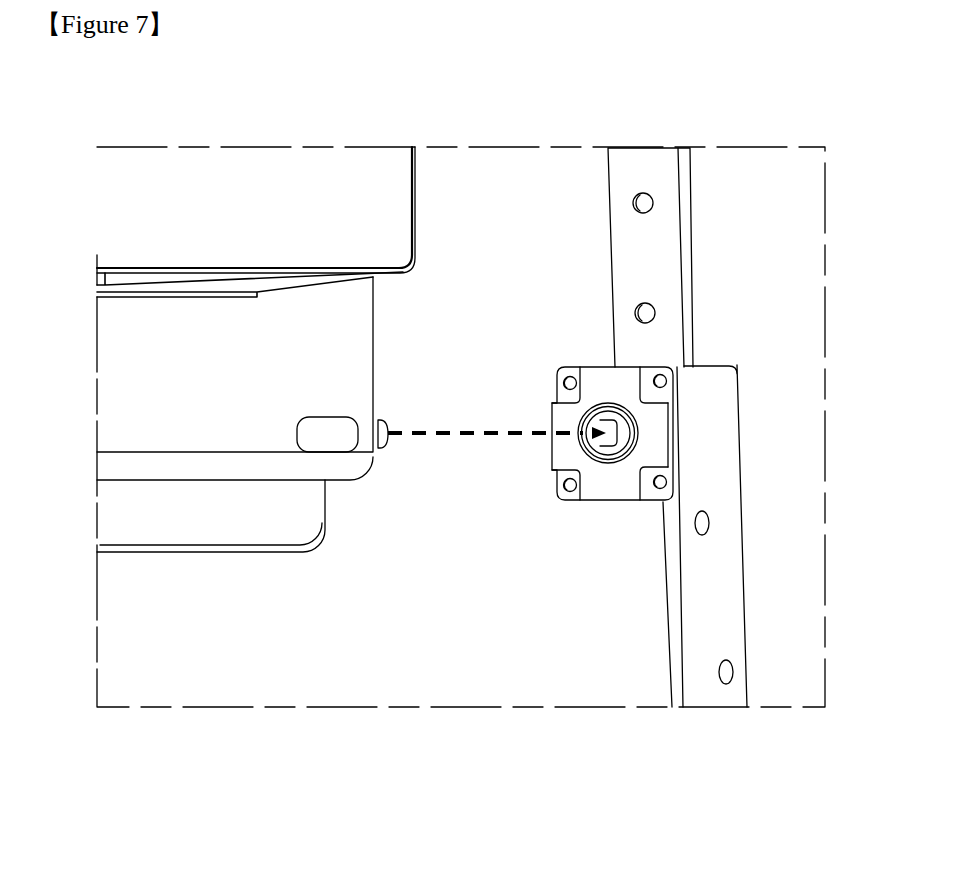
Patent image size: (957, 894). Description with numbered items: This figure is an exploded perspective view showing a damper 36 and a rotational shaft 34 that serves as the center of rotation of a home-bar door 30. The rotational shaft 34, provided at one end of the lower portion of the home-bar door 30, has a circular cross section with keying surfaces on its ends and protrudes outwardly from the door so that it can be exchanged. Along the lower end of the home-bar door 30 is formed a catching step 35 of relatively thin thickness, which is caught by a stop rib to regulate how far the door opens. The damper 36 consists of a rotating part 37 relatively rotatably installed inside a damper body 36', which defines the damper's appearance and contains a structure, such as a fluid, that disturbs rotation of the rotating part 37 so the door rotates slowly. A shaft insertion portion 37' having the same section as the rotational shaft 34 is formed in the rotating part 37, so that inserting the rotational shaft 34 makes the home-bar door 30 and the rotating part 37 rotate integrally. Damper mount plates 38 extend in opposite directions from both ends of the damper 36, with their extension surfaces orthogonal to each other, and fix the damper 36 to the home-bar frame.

The home-bar door 30 is at (128, 382).
The rotational shaft 34 is at (388, 442).
The catching step 35 is at (217, 527).
The damper 36 is at (672, 556).
The damper body 36' is at (765, 443).
The rotating part 37 is at (717, 423).
The shaft insertion portion 37' is at (596, 580).
The damper mount plate 38 is at (685, 227).